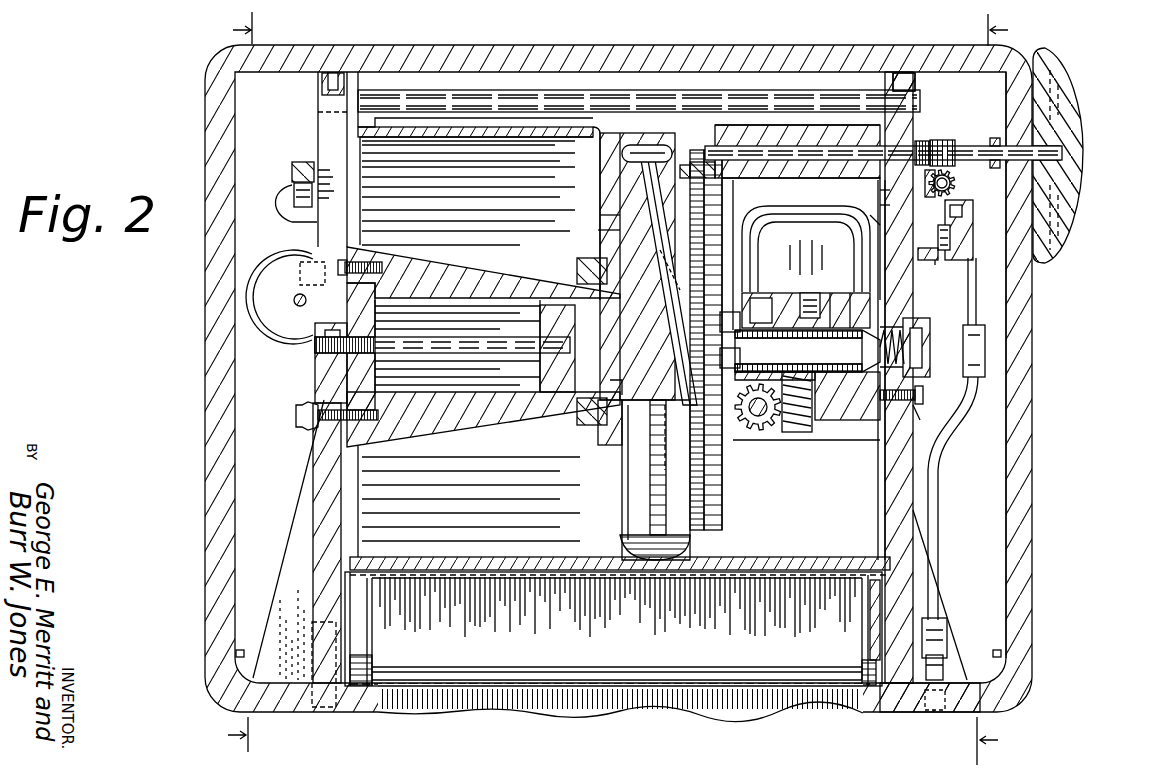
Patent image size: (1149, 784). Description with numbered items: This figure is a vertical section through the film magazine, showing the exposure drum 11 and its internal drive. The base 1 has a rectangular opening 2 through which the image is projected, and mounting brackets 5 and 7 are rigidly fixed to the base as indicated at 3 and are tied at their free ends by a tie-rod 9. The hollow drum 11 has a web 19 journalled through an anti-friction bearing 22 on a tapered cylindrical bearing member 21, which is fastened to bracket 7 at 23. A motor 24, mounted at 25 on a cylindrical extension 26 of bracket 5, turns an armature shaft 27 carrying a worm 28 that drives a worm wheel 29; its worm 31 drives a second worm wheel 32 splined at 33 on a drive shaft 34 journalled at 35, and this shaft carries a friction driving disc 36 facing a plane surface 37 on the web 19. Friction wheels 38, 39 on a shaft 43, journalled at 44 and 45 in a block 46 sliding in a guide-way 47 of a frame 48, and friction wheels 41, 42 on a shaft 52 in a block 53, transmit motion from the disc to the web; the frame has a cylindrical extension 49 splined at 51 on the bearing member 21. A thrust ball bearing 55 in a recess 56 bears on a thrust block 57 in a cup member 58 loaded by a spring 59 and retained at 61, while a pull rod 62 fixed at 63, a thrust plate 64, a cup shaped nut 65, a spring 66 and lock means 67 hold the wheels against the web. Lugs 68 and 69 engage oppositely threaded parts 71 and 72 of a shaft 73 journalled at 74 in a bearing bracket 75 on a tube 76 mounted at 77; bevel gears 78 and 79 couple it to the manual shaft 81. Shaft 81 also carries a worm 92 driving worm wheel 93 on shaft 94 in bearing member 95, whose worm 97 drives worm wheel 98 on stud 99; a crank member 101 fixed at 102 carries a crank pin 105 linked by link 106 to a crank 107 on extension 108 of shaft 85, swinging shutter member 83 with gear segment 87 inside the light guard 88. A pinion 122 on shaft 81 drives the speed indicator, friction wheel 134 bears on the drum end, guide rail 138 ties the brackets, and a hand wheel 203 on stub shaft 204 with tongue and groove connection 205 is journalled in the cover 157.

The base 1 is at (193, 694).
The rectangular opening 2 is at (500, 712).
The mounting point of brackets 3 is at (920, 722).
The mounting bracket 5 is at (888, 520).
The mounting bracket 7 is at (340, 480).
The tie-rod 9 is at (520, 100).
The exposure drum 11 is at (468, 135).
The web 19 is at (608, 215).
The tapered cylindrical bearing member 21 is at (455, 268).
The anti-friction bearing 22 is at (575, 265).
The fastening means 23 is at (296, 410).
The motor 24 is at (806, 212).
The motor mounting 25 is at (830, 292).
The cylindrical extension 26 is at (805, 292).
The armature shaft 27 is at (812, 435).
The worm 28 is at (860, 440).
The worm wheel 29 is at (760, 432).
The worm 31 is at (790, 433).
The second worm wheel 32 is at (762, 292).
The spline 33 is at (807, 351).
The drive shaft 34 is at (798, 350).
The journal 35 is at (850, 292).
The friction driving disc 36 is at (840, 489).
The plane surface 37 is at (645, 200).
The friction wheel 38 is at (662, 430).
The friction wheel 39 is at (620, 152).
The friction wheel 41 is at (669, 270).
The friction wheel 42 is at (661, 545).
The shaft 43 is at (600, 186).
The journal 44 is at (634, 389).
The journal 45 is at (690, 168).
The block 46 is at (606, 236).
The guide-way 47 is at (640, 470).
The frame 48 is at (590, 450).
The cylindrical extension 49 is at (538, 320).
The spline 51 is at (540, 272).
The shaft 52 is at (665, 467).
The block 53 is at (628, 510).
The thrust ball bearing 55 is at (830, 420).
The recess 56 is at (850, 338).
The thrust block 57 is at (922, 395).
The cup member 58 is at (925, 325).
The spring 59 is at (928, 337).
The adjustment retaining means 61 is at (915, 413).
The pull rod 62 is at (430, 337).
The fixing of pull rod 63 is at (540, 372).
The thrust plate 64 is at (375, 312).
The cup shaped nut 65 is at (318, 362).
The spring 66 is at (375, 372).
The lock means 67 is at (442, 347).
The lug 68 is at (705, 378).
The lug 69 is at (727, 324).
The threaded part 71 is at (732, 254).
The threaded part 72 is at (718, 420).
The oppositely threaded shaft 73 is at (712, 515).
The journal 74 is at (682, 165).
The bearing bracket 75 is at (745, 186).
The tube 76 is at (849, 204).
The tube mounting 77 is at (912, 110).
The bevel gear 78 is at (720, 135).
The bevel gear 79 is at (745, 135).
The shaft 81 is at (790, 146).
The arcuate shutter member 83 is at (440, 572).
The shaft 85 is at (808, 672).
The gear segment 87 is at (372, 658).
The light guard 88 is at (569, 631).
The worm 92 is at (944, 140).
The worm wheel 93 is at (958, 173).
The shaft 94 is at (960, 185).
The bearing member 95 is at (890, 210).
The worm 97 is at (890, 200).
The worm wheel 98 is at (930, 258).
The stud 99 is at (940, 258).
The crank member 101 is at (970, 245).
The fixing of crank member 102 is at (972, 205).
The crank pin 105 is at (975, 222).
The link 106 is at (940, 470).
The crank 107 is at (950, 642).
The extension 108 is at (900, 722).
The pinion 122 is at (922, 141).
The friction wheel 134 is at (275, 255).
The guide rail 138 is at (295, 165).
The cover 157 is at (1022, 365).
The hand wheel 203 is at (1078, 128).
The stub shaft 204 is at (1078, 180).
The tongue and groove connection 205 is at (996, 130).